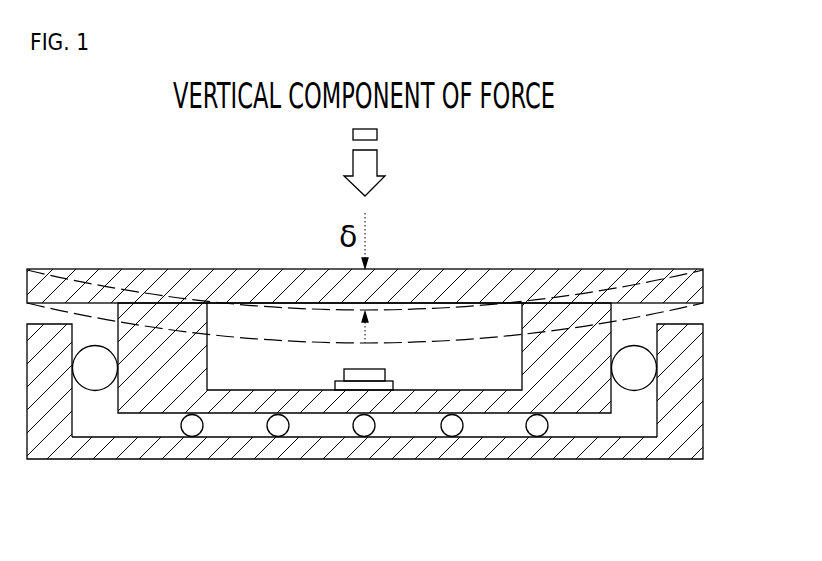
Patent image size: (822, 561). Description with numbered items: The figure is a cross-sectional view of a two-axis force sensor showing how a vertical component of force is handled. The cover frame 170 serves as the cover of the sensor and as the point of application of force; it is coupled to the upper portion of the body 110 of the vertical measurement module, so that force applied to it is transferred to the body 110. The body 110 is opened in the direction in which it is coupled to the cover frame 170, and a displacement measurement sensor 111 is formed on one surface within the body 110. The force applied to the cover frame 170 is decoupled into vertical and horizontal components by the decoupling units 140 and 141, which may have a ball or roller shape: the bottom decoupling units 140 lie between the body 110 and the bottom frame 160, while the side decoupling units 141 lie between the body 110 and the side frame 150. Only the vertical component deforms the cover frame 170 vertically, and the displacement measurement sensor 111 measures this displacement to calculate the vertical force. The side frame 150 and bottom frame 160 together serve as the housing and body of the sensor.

The body of the vertical measurement module 110 is at (162, 392).
The displacement measurement sensor 111 is at (343, 390).
The bottom decoupling units 140 is at (452, 430).
The side decoupling units 141 is at (95, 378).
The side frame 150 is at (693, 387).
The bottom frame 160 is at (572, 448).
The cover frame 170 is at (227, 268).